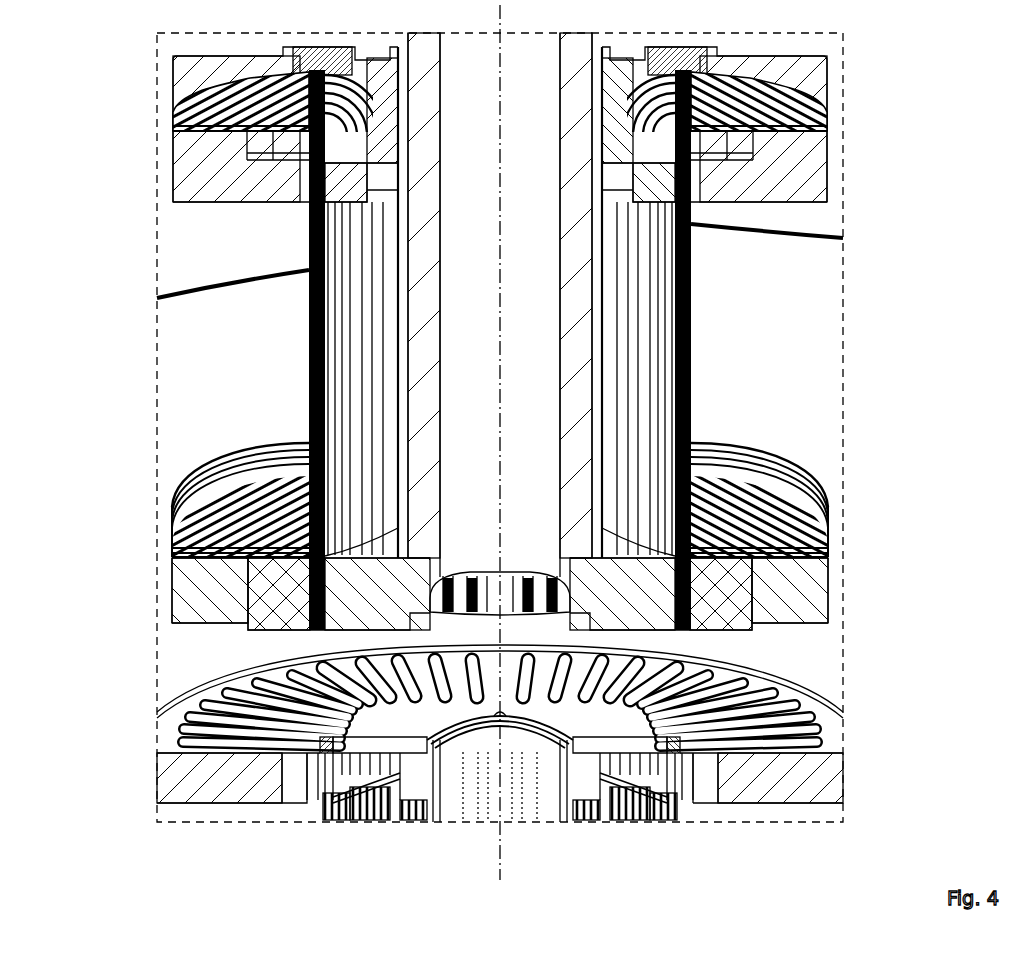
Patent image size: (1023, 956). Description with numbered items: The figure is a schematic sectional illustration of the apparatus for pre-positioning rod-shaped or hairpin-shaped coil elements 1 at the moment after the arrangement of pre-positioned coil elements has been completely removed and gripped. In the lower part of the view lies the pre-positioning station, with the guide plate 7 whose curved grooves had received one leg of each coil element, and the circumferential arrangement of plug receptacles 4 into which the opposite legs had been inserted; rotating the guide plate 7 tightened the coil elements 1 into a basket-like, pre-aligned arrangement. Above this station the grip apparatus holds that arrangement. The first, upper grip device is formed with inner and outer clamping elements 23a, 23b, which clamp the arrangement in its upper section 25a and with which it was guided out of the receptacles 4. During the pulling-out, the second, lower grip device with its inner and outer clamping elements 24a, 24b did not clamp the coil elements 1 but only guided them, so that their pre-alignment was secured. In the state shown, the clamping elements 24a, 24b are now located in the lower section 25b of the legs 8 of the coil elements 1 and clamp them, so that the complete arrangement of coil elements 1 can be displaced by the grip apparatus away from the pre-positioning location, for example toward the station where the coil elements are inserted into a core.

The coil element 1 is at (703, 298).
The plug receptacle 4 is at (372, 828).
The guide plate 7 is at (810, 782).
The leg 8 is at (703, 355).
The inner gripping element 23a is at (250, 150).
The outer gripping element 23b is at (733, 187).
The inner gripping element 24a is at (310, 573).
The outer gripping element 24b is at (800, 605).
The upper section 25a is at (703, 247).
The lower section 25b is at (697, 447).